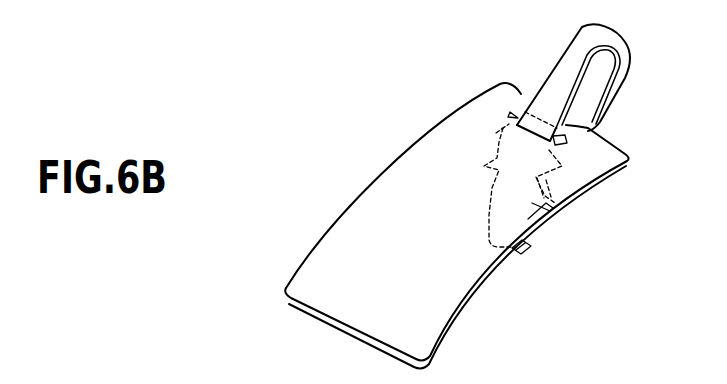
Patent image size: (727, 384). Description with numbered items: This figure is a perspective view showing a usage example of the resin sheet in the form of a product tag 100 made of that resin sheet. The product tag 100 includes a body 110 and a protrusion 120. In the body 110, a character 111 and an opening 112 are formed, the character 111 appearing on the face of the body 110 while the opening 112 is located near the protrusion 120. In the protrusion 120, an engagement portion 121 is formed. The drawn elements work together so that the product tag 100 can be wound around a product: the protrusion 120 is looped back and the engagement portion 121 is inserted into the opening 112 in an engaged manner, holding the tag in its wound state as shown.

The product tag 100 is at (419, 132).
The body 110 is at (477, 293).
The character 111 is at (390, 205).
The opening 112 is at (590, 129).
The protrusion 120 is at (552, 57).
The engagement portion 121 is at (542, 210).